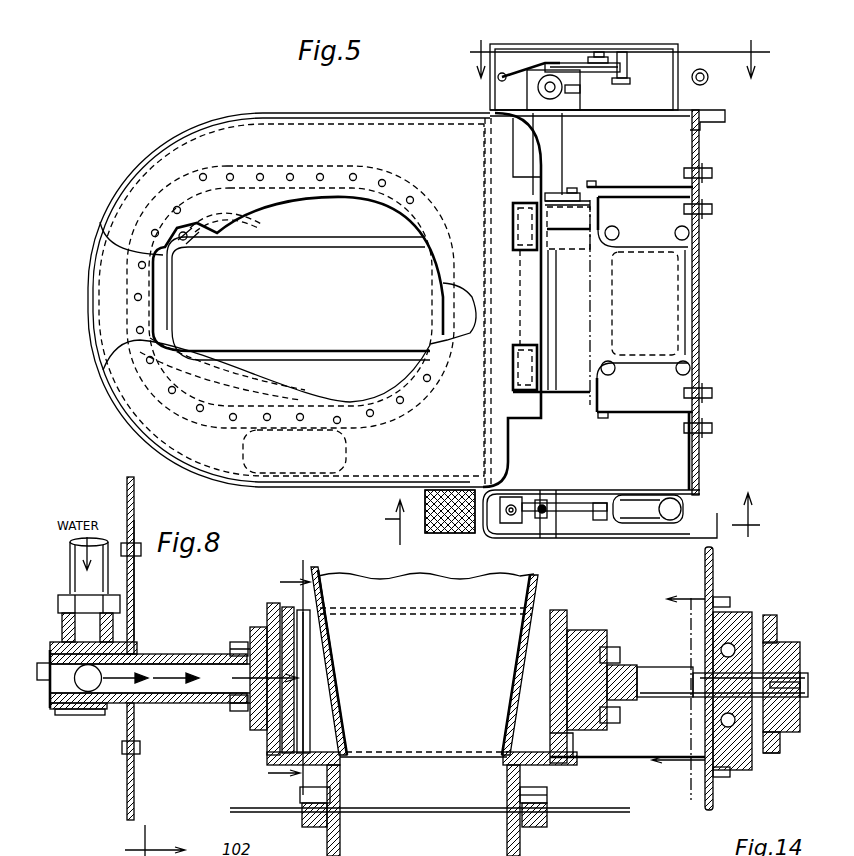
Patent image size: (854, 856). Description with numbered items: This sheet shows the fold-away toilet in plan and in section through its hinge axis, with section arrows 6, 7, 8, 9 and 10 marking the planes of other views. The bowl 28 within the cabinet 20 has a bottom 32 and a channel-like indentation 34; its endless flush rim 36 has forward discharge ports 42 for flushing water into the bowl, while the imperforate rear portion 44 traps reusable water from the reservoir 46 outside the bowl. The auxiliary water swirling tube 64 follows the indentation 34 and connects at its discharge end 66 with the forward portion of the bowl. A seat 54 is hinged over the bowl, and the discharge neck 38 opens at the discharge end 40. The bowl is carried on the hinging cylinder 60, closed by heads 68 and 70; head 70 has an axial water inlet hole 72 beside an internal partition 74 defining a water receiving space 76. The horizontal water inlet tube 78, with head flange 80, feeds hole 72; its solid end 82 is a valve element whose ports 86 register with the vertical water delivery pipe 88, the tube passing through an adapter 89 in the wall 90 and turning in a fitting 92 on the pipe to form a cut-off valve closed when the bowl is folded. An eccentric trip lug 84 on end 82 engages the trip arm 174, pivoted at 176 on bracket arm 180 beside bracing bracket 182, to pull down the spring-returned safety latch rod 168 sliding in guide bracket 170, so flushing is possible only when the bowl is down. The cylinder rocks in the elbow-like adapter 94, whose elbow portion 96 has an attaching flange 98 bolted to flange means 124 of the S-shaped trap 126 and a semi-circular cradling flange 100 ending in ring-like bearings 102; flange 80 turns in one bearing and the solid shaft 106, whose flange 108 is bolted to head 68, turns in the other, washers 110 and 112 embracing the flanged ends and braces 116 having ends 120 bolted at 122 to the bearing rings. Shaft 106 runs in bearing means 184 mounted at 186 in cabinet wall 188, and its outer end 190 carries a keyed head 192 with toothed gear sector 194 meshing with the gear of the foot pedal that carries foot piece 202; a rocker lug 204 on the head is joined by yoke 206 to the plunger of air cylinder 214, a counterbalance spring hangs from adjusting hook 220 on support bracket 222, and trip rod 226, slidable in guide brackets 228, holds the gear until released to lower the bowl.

In FIG. 5, the section line 6- 6 is at (611, 46).
In FIG. 5, the section line 7- 7 is at (572, 519).
In FIG. 8, the section line 8- 8 is at (144, 840).
In FIG. 8, the section line 9- 9 is at (678, 687).
In FIG. 8, the section line 10- 10 is at (274, 677).
In FIG. 8, the cabinet 20 is at (727, 586).
In FIG. 8, the bowl 28 is at (549, 596).
In FIG. 5, the bottom 32 is at (288, 300).
In FIG. 5, the channel-like indentation 34 is at (308, 350).
In FIG. 5, the flush rim 36 is at (397, 178).
In FIG. 5, the discharge neck 38 is at (548, 286).
In FIG. 8, the discharge neck 38 is at (518, 642).
In FIG. 8, the discharge end 40 is at (445, 752).
In FIG. 5, the discharge ports 42 is at (200, 408).
In FIG. 5, the rear portion 44 is at (462, 303).
In FIG. 5, the reservoir 46 is at (345, 463).
In FIG. 5, the seat 54 is at (190, 440).
In FIG. 5, the hinging head or cylinder 60 is at (551, 269).
In FIG. 8, the hinging head or cylinder 60 is at (545, 612).
In FIG. 5, the auxiliary water swirling tube 64 is at (340, 233).
In FIG. 5, the discharge end 66 is at (186, 242).
In FIG. 8, the closing head 68 is at (556, 750).
In FIG. 8, the closing head 70 is at (292, 637).
In FIG. 8, the water inlet hole 72 is at (308, 660).
In FIG. 8, the internal partition 74 is at (313, 690).
In FIG. 8, the water receiving space 76 is at (347, 720).
In FIG. 5, the water inlet tube 78 is at (560, 160).
In FIG. 8, the water inlet tube 78 is at (198, 703).
In FIG. 8, the head flange 80 is at (248, 728).
In FIG. 8, the closed end portion 82 is at (45, 690).
In FIG. 5, the trip lug 84 is at (553, 63).
In FIG. 8, the trip lug 84 is at (50, 660).
In FIG. 8, the ports 86 is at (80, 690).
In FIG. 5, the water delivery pipe 88 is at (550, 100).
In FIG. 8, the water delivery pipe 88 is at (70, 568).
In FIG. 8, the adapter 89 is at (136, 606).
In FIG. 8, the wall 90 is at (134, 512).
In FIG. 5, the fitting 92 is at (575, 95).
In FIG. 8, the fitting 92 is at (100, 715).
In FIG. 5, the elbow-like fitting 94 is at (663, 316).
In FIG. 5, the elbow-like portion 96 is at (660, 272).
In FIG. 8, the elbow-like portion 96 is at (340, 790).
In FIG. 5, the attaching flange 98 is at (688, 300).
In FIG. 8, the attaching flange 98 is at (548, 800).
In FIG. 8, the cradling flange 100 is at (547, 786).
In FIG. 8, the ring-like bearings 102 is at (268, 618).
In FIG. 5, the solid shaft 106 is at (548, 468).
In FIG. 8, the solid shaft 106 is at (668, 672).
In FIG. 8, the flange 108 is at (600, 618).
In FIG. 5, the washer 110 is at (548, 196).
In FIG. 8, the washer 110 is at (240, 645).
In FIG. 5, the washer 112 is at (548, 412).
In FIG. 8, the washer 112 is at (608, 648).
In FIG. 5, the braces 116 is at (655, 187).
In FIG. 8, the brace ends 120 is at (238, 652).
In FIG. 5, the bolts 122 is at (596, 182).
In FIG. 8, the bolts 122 is at (232, 664).
In FIG. 8, the flange means 124 is at (547, 823).
In FIG. 8, the S-shaped trap 126 is at (380, 855).
In FIG. 5, the safety latch rod 168 is at (512, 72).
In FIG. 5, the guide bracket 170 is at (502, 72).
In FIG. 5, the trip arm 174 is at (568, 63).
In FIG. 5, the pivot 176 is at (600, 58).
In FIG. 5, the bracket arm 180 is at (622, 84).
In FIG. 5, the bracing bracket 182 is at (620, 70).
In FIG. 8, the bearing means 184 is at (737, 620).
In FIG. 8, the bearing mounting 186 is at (727, 776).
In FIG. 8, the wall 188 is at (713, 575).
In FIG. 8, the extended outer end 190 is at (800, 700).
In FIG. 5, the keyed head 192 is at (548, 495).
In FIG. 8, the keyed head 192 is at (790, 642).
In FIG. 8, the toothed gear sector 194 is at (772, 754).
In FIG. 5, the foot piece 202 is at (452, 490).
In FIG. 5, the rocker arm 204 is at (565, 512).
In FIG. 5, the yoke 206 is at (595, 503).
In FIG. 5, the air cylinder 214 is at (648, 520).
In FIG. 5, the adjusting hook 220 is at (500, 525).
In FIG. 5, the support bracket 222 is at (503, 518).
In FIG. 5, the trip rod 226 is at (543, 515).
In FIG. 5, the guide brackets 228 is at (532, 518).